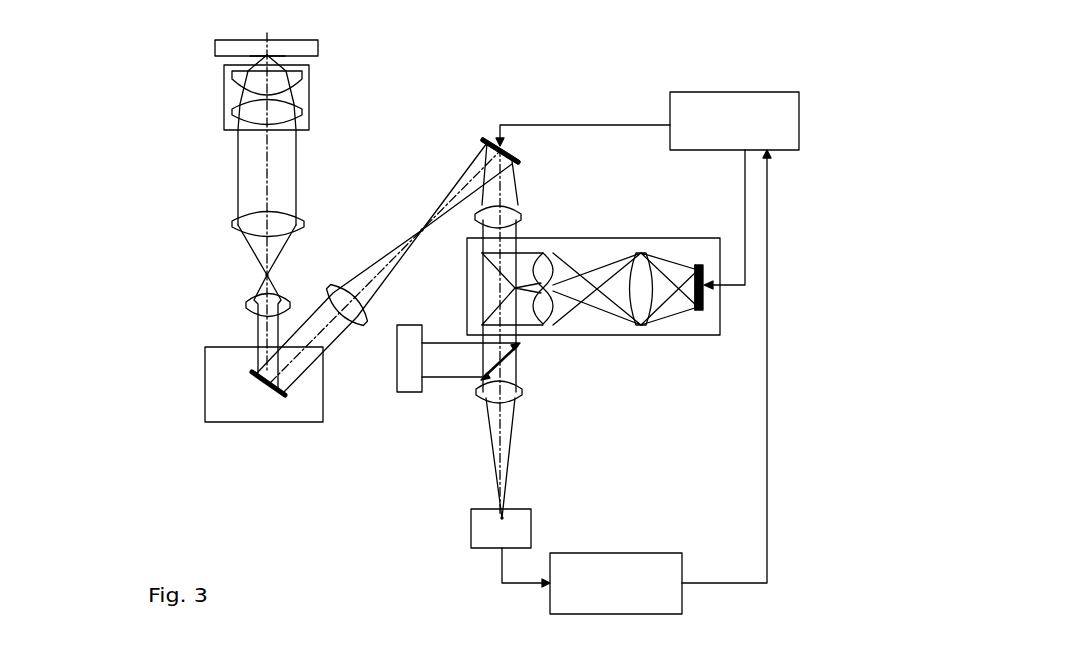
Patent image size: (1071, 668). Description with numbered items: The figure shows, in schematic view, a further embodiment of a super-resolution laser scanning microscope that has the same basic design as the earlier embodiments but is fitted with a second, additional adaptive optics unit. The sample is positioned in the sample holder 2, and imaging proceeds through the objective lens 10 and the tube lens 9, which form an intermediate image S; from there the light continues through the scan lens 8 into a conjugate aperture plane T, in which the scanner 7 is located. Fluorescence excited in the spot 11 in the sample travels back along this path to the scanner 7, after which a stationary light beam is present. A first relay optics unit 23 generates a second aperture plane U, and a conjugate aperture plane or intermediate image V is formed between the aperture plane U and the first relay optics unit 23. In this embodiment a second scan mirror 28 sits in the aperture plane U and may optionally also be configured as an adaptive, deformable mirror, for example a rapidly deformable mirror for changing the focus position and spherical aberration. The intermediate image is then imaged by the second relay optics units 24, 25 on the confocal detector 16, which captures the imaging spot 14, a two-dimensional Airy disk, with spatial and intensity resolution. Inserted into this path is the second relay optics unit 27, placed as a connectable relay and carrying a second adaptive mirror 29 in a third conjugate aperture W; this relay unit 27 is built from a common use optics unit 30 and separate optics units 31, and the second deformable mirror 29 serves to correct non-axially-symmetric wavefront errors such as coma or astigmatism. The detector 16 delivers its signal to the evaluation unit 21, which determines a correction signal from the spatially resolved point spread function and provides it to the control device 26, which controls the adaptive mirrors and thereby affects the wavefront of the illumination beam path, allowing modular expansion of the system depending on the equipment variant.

The sample holder 2 is at (215, 47).
The spot 11 is at (268, 52).
The objective lens 10 is at (224, 108).
The tube lens 9 is at (233, 222).
The intermediate image S is at (262, 276).
The scan lens 8 is at (246, 305).
The scanner 7 is at (205, 393).
The conjugate aperture plane T is at (255, 372).
The first relay optics unit 23 is at (360, 328).
The intermediate image V is at (412, 222).
The second scan mirror 28 is at (507, 152).
The second aperture plane U is at (492, 143).
The second relay optics unit 24 is at (521, 217).
The second relay optics unit 27 is at (620, 238).
The separate optics units 31 is at (548, 313).
The common use optics unit 30 is at (641, 326).
The second adaptive mirror 29 is at (699, 313).
The third conjugate aperture W is at (699, 264).
The control device 26 is at (670, 107).
The second relay optics unit 25 is at (522, 394).
The imaging spot 14 is at (504, 517).
The confocal detector 16 is at (502, 535).
The evaluation unit 21 is at (645, 553).